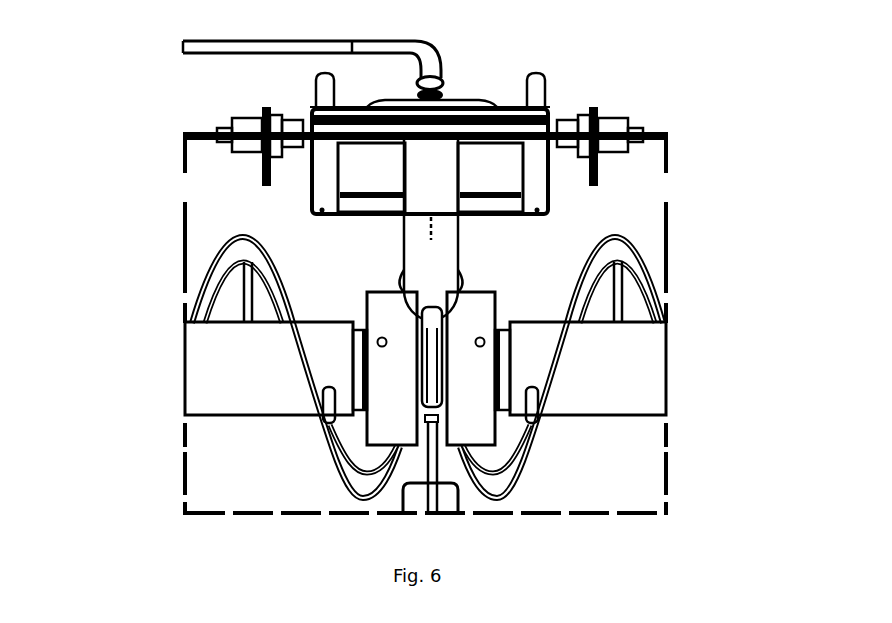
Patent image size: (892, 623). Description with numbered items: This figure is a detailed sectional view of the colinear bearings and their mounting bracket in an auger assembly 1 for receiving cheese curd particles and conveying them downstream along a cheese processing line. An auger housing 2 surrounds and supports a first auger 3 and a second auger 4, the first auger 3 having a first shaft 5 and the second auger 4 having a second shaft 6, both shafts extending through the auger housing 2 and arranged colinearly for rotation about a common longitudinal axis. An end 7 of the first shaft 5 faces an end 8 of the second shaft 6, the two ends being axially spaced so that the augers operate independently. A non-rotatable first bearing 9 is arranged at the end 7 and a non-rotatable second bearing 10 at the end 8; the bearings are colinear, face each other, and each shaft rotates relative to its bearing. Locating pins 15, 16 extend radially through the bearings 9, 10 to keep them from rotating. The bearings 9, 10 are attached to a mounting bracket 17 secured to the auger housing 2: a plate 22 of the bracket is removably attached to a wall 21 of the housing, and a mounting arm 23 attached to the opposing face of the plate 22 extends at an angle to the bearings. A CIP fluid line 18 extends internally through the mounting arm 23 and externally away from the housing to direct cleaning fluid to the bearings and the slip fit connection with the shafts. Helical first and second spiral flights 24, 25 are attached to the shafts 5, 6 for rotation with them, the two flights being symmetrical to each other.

The auger assembly 1 is at (129, 150).
The auger housing 2 is at (185, 254).
The first auger 3 is at (176, 375).
The second auger 4 is at (657, 375).
The first shaft 5 is at (220, 348).
The second shaft 6 is at (618, 348).
The end of the first shaft 7 is at (325, 397).
The end of the second shaft 8 is at (508, 372).
The first bearing 9 is at (383, 352).
The second bearing 10 is at (472, 421).
The locating pin 15 is at (370, 420).
The locating pin 16 is at (578, 290).
The mounting bracket 17 is at (283, 101).
The CIP fluid line 18 is at (438, 45).
The wall 21 is at (184, 135).
The plate 22 is at (490, 110).
The mounting arm 23 is at (432, 228).
The first spiral flight 24 is at (233, 238).
The second spiral flight 25 is at (614, 232).